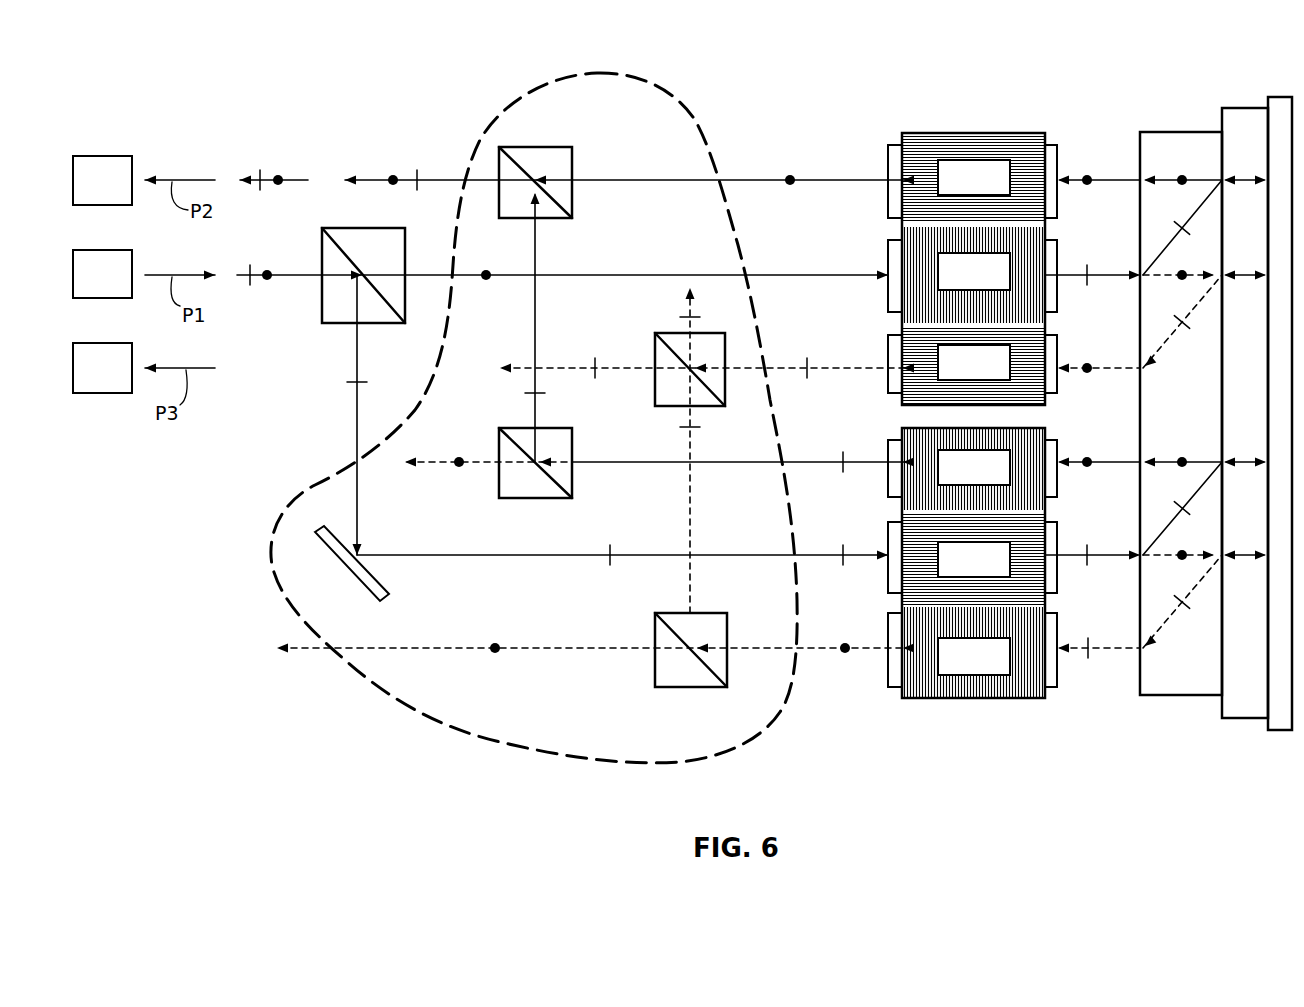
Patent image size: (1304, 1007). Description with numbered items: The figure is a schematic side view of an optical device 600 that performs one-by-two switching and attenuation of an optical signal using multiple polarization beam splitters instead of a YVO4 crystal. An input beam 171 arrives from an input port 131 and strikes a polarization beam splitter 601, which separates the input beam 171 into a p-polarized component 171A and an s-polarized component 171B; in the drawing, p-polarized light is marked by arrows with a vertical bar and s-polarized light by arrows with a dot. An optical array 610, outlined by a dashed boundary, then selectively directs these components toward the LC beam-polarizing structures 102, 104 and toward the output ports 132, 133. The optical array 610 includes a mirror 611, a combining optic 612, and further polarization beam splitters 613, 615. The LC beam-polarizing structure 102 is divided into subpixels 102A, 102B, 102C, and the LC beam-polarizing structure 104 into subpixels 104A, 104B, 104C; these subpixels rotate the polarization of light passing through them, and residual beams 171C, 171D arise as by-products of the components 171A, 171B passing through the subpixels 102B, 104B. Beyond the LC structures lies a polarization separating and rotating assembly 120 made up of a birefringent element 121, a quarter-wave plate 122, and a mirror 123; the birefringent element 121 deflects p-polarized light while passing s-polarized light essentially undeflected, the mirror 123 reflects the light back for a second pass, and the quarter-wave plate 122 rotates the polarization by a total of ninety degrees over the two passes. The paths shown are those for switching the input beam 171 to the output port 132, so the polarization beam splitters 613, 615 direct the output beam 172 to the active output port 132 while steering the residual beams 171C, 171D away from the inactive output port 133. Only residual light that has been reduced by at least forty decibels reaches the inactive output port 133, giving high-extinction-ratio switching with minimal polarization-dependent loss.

The optical device 600 is at (340, 116).
The optical array 610 is at (430, 713).
The polarization beam splitter 601 is at (338, 325).
The mirror 611 is at (386, 600).
The combining optic 612 is at (553, 147).
The polarization beam splitter 613 is at (537, 500).
The polarization beam splitter 615 is at (712, 333).
The input port 131 is at (102, 274).
The output port 132 is at (102, 180).
The output port 133 is at (102, 368).
The input beam 171 is at (296, 281).
The component 171A is at (357, 440).
The component 171B is at (707, 275).
The residual beam 171C is at (672, 311).
The residual beam 171D is at (690, 450).
The output beam 172 is at (292, 185).
The LC beam-polarizing structure 102 is at (972, 252).
The subpixel 102A is at (973, 178).
The subpixel 102B is at (973, 275).
The subpixel 102C is at (973, 365).
The LC beam-polarizing structure 104 is at (972, 590).
The subpixel 104A is at (973, 469).
The subpixel 104B is at (973, 558).
The subpixel 104C is at (973, 652).
The polarization separating and rotating assembly 120 is at (1200, 419).
The birefringent element 121 is at (1200, 132).
The quarter-wave plate 122 is at (1245, 108).
The mirror 123 is at (1280, 735).